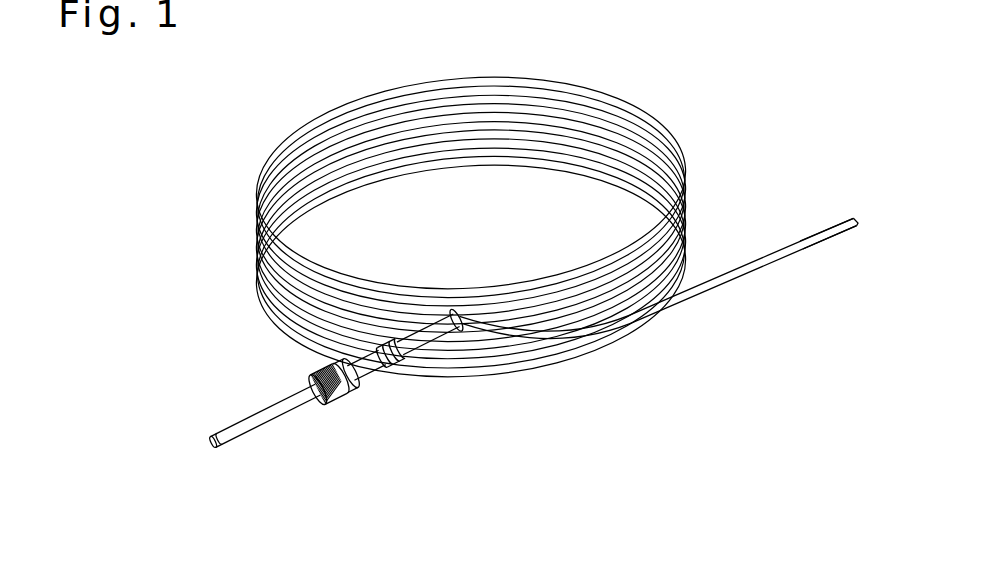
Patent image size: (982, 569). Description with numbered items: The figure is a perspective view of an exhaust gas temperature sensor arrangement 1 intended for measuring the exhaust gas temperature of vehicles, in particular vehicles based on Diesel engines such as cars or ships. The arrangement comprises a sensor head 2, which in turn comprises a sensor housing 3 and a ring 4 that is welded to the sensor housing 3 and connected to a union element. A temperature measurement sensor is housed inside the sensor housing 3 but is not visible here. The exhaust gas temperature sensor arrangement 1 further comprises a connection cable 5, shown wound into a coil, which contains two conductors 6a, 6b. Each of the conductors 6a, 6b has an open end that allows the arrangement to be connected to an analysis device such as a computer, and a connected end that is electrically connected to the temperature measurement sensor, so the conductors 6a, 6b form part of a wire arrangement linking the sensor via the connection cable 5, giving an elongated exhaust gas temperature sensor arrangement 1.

The exhaust gas temperature sensor arrangement 1 is at (178, 150).
The sensor head 2 is at (295, 427).
The sensor housing 3 is at (239, 426).
The ring 4 is at (347, 402).
The connection cable 5 is at (667, 117).
The conductor 6a is at (857, 224).
The conductor 6b is at (856, 232).